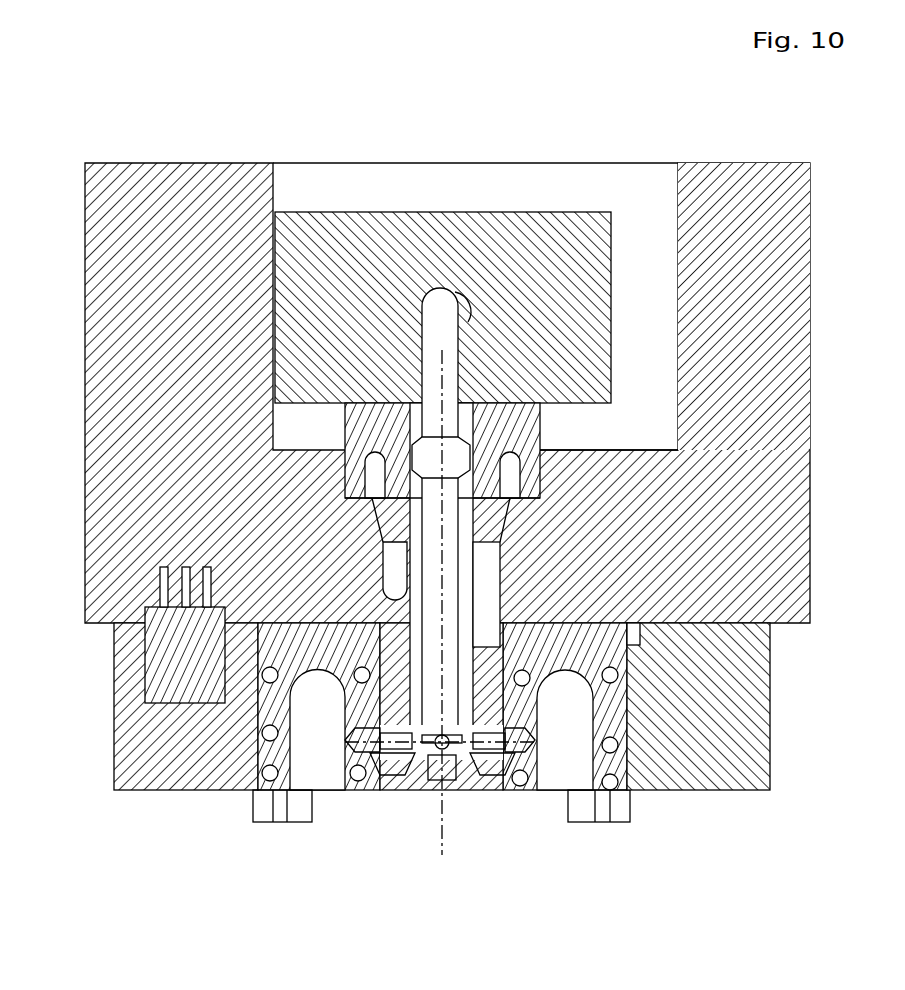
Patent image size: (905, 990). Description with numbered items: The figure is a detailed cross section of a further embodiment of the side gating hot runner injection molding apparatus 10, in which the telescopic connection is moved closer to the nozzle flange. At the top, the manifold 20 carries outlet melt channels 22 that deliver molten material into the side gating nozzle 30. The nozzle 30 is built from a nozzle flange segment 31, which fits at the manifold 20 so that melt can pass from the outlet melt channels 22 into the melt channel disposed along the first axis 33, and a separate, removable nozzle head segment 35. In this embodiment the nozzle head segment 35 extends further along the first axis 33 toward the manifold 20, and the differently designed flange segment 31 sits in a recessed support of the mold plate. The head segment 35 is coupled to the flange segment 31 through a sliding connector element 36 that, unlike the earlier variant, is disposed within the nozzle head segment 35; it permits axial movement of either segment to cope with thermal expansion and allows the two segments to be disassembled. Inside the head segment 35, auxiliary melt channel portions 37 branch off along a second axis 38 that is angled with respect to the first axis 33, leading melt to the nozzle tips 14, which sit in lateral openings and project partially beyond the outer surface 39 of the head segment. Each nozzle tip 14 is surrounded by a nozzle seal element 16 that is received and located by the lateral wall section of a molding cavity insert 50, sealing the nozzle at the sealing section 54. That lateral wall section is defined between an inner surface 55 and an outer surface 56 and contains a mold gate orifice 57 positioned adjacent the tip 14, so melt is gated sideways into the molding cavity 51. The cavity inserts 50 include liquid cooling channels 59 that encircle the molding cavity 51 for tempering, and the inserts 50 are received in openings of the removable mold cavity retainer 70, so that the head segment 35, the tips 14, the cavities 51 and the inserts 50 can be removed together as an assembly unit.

The side gating hot runner injection molding apparatus 10 is at (663, 118).
The manifold 20 is at (322, 228).
The outlet melt channels 22 is at (450, 418).
The nozzle flange segment 31 is at (512, 425).
The side gating nozzle 30 is at (598, 442).
The sliding connector element 36 is at (406, 478).
The outer surface of the nozzle head segment 39 is at (382, 698).
The outer surface of the lateral wall section 56 is at (254, 708).
The molding cavity insert 50 is at (262, 712).
The inner surface of the lateral wall section 55 is at (322, 752).
The nozzle seal element 16 is at (327, 800).
The molding cavity 51 is at (335, 790).
The nozzle tip 14 is at (355, 790).
The nozzle head segment 35 is at (392, 790).
The auxiliary melt channel portions 37 is at (432, 790).
The second axis 38 is at (455, 790).
The first axis 33 is at (448, 853).
The sealing section 54 is at (528, 770).
The mold gate orifice 57 is at (540, 745).
The liquid cooling channels 59 is at (622, 762).
The mold cavity retainer 70 is at (712, 768).